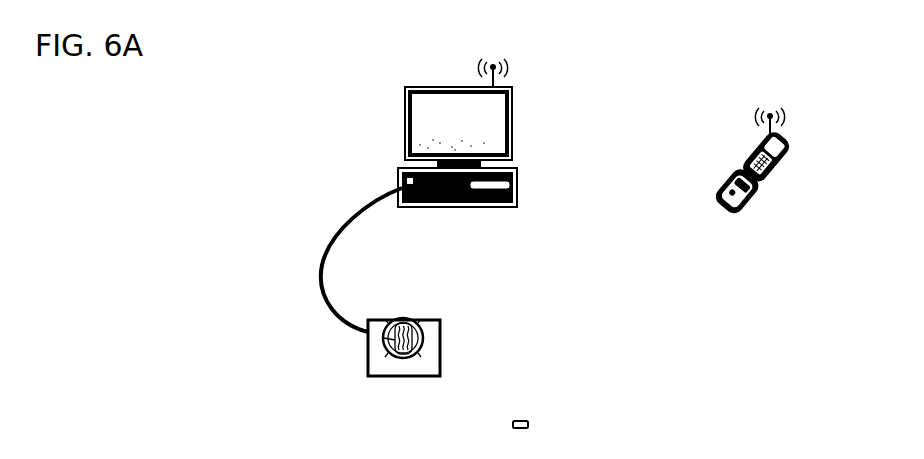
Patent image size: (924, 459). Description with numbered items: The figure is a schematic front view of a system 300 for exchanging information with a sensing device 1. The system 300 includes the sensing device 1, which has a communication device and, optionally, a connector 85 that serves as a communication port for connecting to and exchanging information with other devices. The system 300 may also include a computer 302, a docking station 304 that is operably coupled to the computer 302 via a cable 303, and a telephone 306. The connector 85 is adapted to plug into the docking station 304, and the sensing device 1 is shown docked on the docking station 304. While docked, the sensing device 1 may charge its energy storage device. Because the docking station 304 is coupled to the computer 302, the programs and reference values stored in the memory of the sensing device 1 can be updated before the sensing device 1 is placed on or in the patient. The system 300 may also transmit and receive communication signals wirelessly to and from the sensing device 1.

The system 300 is at (194, 178).
The computer 302 is at (397, 170).
The cable 303 is at (318, 277).
The docking station 304 is at (442, 355).
The sensing device 1 is at (402, 358).
The connector 85 is at (521, 418).
The telephone 306 is at (780, 183).